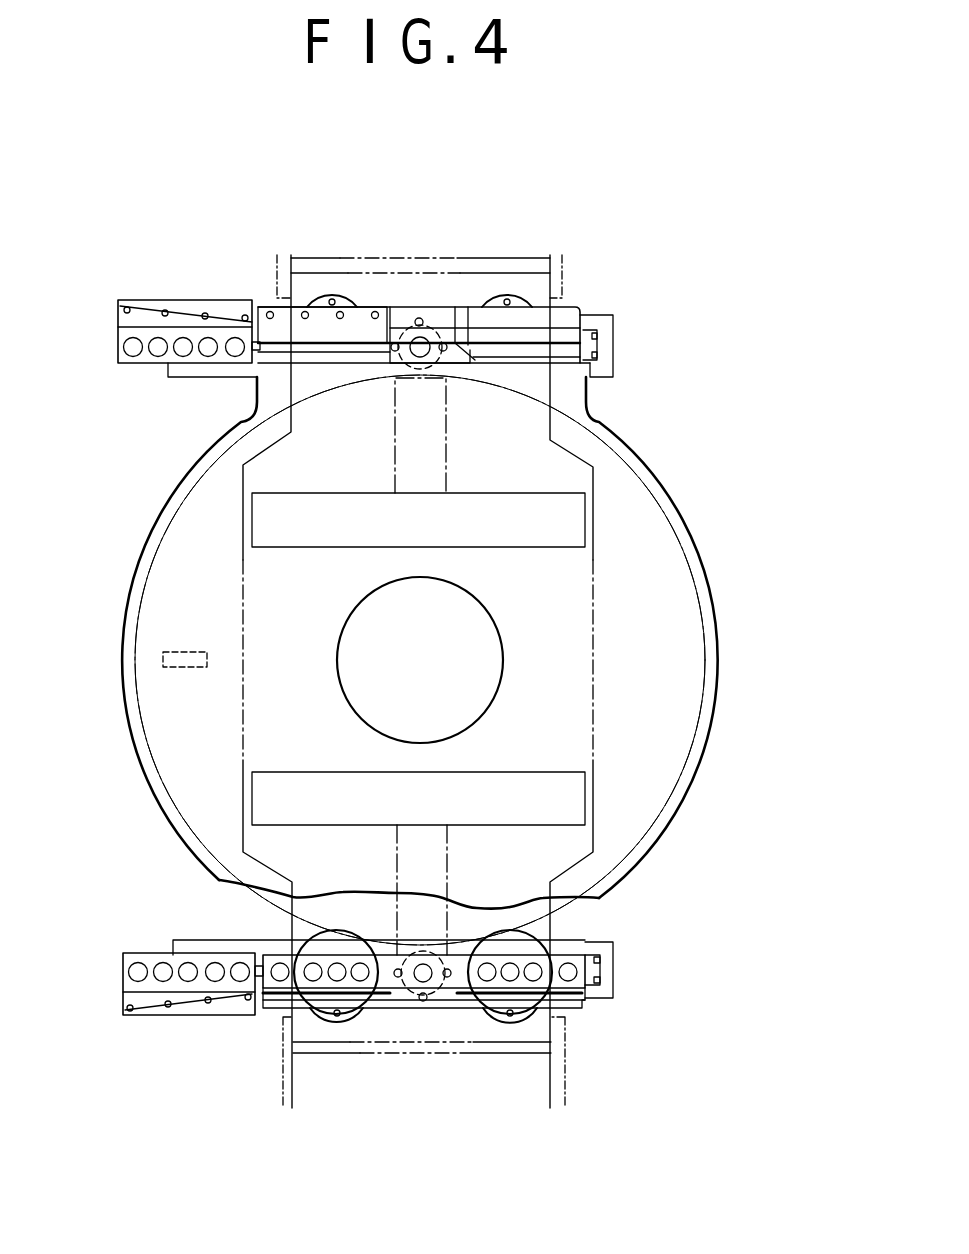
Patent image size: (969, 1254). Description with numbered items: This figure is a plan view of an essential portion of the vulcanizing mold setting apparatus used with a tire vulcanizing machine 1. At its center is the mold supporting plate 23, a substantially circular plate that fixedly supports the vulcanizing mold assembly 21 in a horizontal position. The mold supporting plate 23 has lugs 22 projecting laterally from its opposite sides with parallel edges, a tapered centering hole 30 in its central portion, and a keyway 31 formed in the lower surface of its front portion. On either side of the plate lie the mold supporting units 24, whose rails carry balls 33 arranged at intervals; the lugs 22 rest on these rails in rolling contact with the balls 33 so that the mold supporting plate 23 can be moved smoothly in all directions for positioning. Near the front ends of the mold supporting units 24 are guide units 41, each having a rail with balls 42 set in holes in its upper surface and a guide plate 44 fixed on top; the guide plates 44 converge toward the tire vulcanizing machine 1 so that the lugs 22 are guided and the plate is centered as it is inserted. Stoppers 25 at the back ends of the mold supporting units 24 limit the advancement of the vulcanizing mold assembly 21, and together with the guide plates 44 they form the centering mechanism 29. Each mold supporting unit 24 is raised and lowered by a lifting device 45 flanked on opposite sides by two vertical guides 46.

The tire vulcanizing machine 1 is at (566, 268).
The vulcanizing mold assembly 21 is at (683, 765).
The lugs 22 is at (570, 308).
The mold supporting plate 23 is at (703, 593).
The mold supporting units 24 is at (398, 300).
The stoppers 25 is at (612, 330).
The centering mechanism 29 is at (364, 653).
The tapered centering hole 30 is at (440, 586).
The keyway 31 is at (178, 668).
The balls 33 is at (360, 963).
The guide units 41 is at (118, 343).
The balls 42 is at (157, 353).
The guide plate 44 is at (148, 308).
The lifting device 45 is at (438, 322).
The vertical guides 46 is at (333, 298).